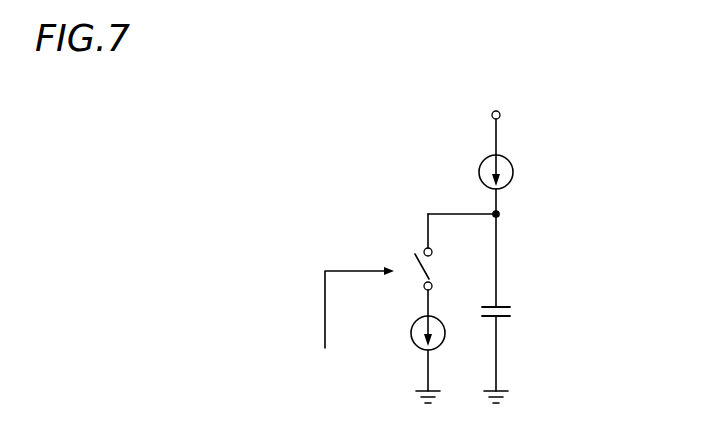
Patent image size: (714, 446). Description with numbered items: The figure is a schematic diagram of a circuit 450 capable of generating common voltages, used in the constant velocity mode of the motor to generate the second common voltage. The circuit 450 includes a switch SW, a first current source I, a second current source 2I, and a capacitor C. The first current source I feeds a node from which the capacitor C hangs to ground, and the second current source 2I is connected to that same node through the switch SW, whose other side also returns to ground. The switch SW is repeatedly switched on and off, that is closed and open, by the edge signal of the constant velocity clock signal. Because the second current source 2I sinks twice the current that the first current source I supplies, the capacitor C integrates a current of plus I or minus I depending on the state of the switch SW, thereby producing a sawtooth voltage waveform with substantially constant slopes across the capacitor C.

The circuit 450 is at (511, 81).
The first current source I is at (501, 172).
The second current source 2I is at (413, 333).
The switch SW is at (443, 269).
The capacitor C is at (507, 314).